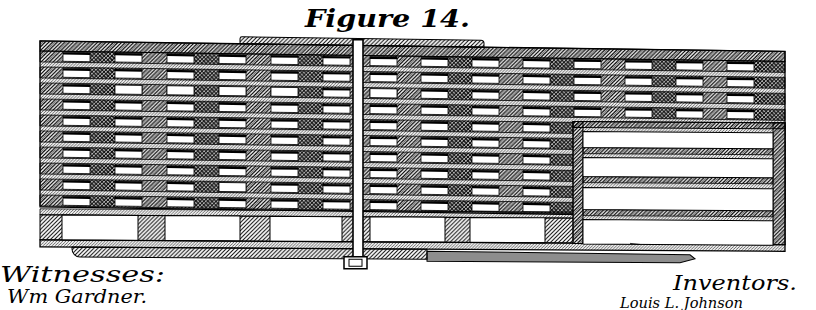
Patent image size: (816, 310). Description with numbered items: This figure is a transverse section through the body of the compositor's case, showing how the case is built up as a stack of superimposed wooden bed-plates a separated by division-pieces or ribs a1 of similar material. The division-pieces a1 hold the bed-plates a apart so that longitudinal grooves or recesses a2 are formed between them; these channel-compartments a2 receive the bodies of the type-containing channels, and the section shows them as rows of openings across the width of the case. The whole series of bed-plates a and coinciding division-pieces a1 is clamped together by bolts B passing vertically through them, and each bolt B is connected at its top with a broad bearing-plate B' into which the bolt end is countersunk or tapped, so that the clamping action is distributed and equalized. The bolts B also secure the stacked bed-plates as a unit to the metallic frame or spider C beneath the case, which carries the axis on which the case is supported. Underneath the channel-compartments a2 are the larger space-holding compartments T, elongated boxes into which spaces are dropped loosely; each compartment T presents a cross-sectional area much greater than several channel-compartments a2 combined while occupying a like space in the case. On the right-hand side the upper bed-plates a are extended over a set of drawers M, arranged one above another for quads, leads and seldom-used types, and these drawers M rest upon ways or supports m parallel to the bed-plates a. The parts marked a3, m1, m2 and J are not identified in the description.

The bolts B is at (350, 175).
The bearing-plates B' is at (362, 37).
The metallic frame or spider C is at (395, 265).
The space-holding compartments T is at (412, 229).
The drawers or sliding compartments M is at (678, 189).
The bed-plates a is at (412, 133).
The division-pieces or ribs a1 is at (259, 94).
The longitudinal grooves or recesses a2 is at (338, 142).
The section block a3 is at (258, 94).
The ways or supports m is at (678, 218).
The mold partition m1 is at (678, 173).
The mold partition m2 is at (678, 186).
The mold compartment J is at (632, 239).